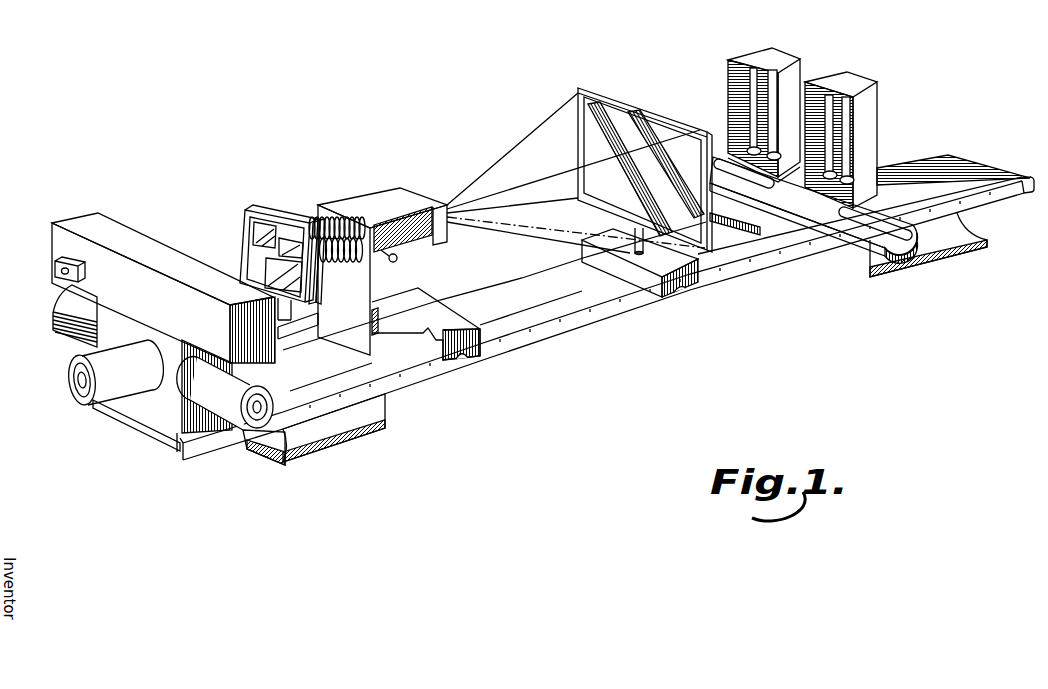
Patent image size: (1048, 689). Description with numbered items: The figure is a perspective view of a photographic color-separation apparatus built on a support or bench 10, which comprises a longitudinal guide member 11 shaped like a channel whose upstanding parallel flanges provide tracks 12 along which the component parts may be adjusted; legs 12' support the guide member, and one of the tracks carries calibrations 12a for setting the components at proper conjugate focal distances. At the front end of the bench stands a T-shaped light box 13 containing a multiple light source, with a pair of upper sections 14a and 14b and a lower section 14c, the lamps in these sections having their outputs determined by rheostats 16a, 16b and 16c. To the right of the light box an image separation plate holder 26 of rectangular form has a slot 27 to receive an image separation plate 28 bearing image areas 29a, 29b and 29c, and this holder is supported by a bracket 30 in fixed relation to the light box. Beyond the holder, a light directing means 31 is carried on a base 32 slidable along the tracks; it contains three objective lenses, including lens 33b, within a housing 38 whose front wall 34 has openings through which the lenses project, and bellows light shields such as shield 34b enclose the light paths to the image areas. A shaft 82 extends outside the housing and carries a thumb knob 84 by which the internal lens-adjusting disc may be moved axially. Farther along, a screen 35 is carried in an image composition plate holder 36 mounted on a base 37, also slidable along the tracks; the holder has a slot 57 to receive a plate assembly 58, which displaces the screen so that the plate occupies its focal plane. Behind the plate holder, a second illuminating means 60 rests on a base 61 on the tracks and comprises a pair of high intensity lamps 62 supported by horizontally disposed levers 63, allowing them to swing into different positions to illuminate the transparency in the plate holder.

The support or bench 10 is at (658, 302).
The longitudinal guide member 11 is at (933, 170).
The tracks 12 is at (608, 310).
The legs 12' is at (635, 345).
The calibrations 12a is at (518, 343).
The light box 13 is at (142, 233).
The upper section 14a is at (78, 219).
The upper section 14b is at (237, 297).
The lower section 14c is at (152, 408).
The rheostat 16a is at (65, 300).
The rheostat 16b is at (248, 421).
The rheostat 16c is at (68, 368).
The image separation plate holder 26 is at (244, 211).
The slot 27 is at (309, 303).
The image separation plate 28 is at (279, 237).
The image area 29a is at (259, 228).
The image area 29b is at (289, 240).
The image area 29c is at (283, 278).
The bracket 30 is at (313, 240).
The light directing means 31 is at (428, 186).
The base 32 is at (462, 328).
The objective lens 33b is at (358, 242).
The front wall 34 is at (352, 284).
The light shield 34b is at (340, 226).
The screen 35 is at (650, 124).
The image composition plate holder 36 is at (622, 89).
The base 37 is at (633, 272).
The housing 38 is at (428, 242).
The slot 57 is at (710, 140).
The plate assembly 58 is at (707, 241).
The second illuminating means 60 is at (838, 68).
The base 61 is at (812, 220).
The high intensity lamps 62 is at (783, 58).
The levers 63 is at (735, 171).
The shaft 82 is at (433, 200).
The thumb knob 84 is at (392, 257).